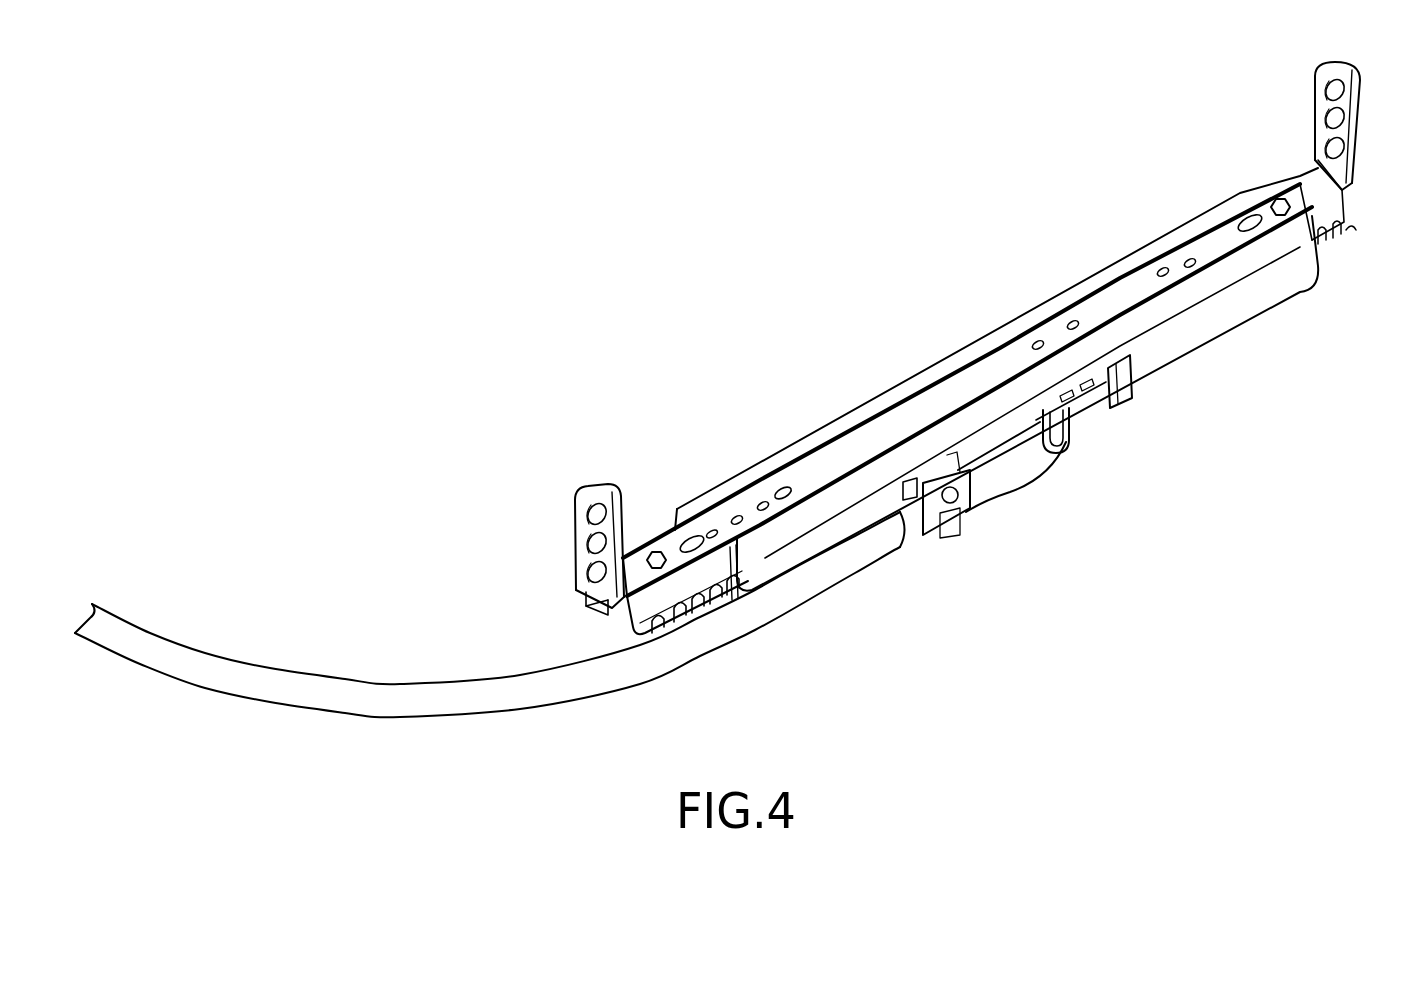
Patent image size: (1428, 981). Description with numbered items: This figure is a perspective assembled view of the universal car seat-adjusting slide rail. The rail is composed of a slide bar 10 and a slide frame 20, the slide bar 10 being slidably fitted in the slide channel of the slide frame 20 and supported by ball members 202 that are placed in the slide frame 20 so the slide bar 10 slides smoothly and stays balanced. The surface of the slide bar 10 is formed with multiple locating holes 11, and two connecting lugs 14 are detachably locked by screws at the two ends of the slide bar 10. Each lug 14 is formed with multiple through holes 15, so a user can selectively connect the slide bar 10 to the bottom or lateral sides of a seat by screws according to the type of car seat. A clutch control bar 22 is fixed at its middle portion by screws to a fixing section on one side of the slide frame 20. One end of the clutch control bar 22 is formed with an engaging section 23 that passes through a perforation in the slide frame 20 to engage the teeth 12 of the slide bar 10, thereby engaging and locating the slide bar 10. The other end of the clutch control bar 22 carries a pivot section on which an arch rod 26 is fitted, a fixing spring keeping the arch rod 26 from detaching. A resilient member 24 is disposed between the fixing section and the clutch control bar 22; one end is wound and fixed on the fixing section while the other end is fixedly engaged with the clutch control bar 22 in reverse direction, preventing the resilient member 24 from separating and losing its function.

The slide bar 10 is at (990, 366).
The locating holes 11 is at (783, 488).
The teeth 12 is at (690, 616).
The connecting lugs 14 is at (578, 575).
The through holes 15 is at (588, 532).
The slide frame 20 is at (880, 402).
The clutch control bar 22 is at (1048, 445).
The engaging section 23 is at (1115, 405).
The resilient member 24 is at (1022, 490).
The arch rod 26 is at (608, 694).
The ball members 202 is at (930, 535).